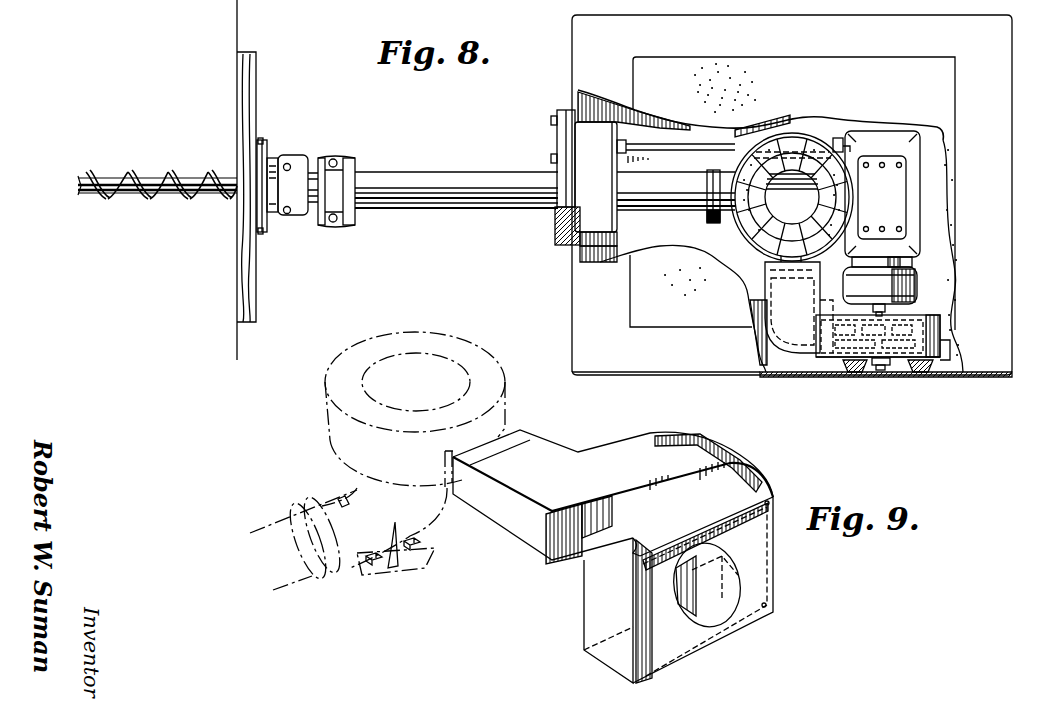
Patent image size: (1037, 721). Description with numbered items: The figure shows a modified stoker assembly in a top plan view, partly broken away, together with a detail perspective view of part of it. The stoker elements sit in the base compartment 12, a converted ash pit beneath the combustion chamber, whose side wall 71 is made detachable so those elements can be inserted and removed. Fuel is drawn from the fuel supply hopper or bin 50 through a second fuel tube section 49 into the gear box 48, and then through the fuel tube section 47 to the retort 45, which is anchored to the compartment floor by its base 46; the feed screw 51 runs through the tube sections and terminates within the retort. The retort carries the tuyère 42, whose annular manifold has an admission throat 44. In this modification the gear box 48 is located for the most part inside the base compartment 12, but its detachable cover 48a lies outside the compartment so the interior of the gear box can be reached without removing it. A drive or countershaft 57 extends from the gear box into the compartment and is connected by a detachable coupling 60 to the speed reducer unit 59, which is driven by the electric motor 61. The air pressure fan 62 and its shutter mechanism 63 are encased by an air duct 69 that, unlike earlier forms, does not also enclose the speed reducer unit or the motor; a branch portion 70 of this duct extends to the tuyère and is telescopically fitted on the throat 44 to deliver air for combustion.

In FIG. 8, the base compartment 12 is at (578, 100).
In FIG. 8, the tuyère 42 is at (816, 188).
In FIG. 9, the tuyère 42 is at (450, 400).
In FIG. 8, the admission throat 44 is at (765, 259).
In FIG. 9, the admission throat 44 is at (506, 428).
In FIG. 8, the retort 45 is at (726, 221).
In FIG. 9, the retort 45 is at (441, 518).
In FIG. 9, the base 46 is at (392, 572).
In FIG. 8, the fuel tube section 47 is at (695, 220).
In FIG. 9, the fuel tube section 47 is at (304, 583).
In FIG. 8, the gear box 48 is at (620, 229).
In FIG. 8, the detachable cover 48a is at (557, 126).
In FIG. 8, the second fuel tube section 49 is at (465, 206).
In FIG. 8, the fuel supply hopper or bin 50 is at (237, 358).
In FIG. 8, the feed screw 51 is at (133, 173).
In FIG. 8, the drive or countershaft 57 is at (678, 150).
In FIG. 8, the speed reducer unit 59 is at (882, 199).
In FIG. 8, the detachable coupling 60 is at (838, 138).
In FIG. 8, the electric motor 61 is at (880, 291).
In FIG. 8, the air pressure fan 62 is at (946, 322).
In FIG. 8, the shutter mechanism 63 is at (874, 380).
In FIG. 8, the air duct 69 is at (944, 348).
In FIG. 9, the air duct 69 is at (584, 607).
In FIG. 8, the branch portion 70 is at (766, 304).
In FIG. 9, the branch portion 70 is at (557, 451).
In FIG. 8, the side wall 71 is at (660, 374).